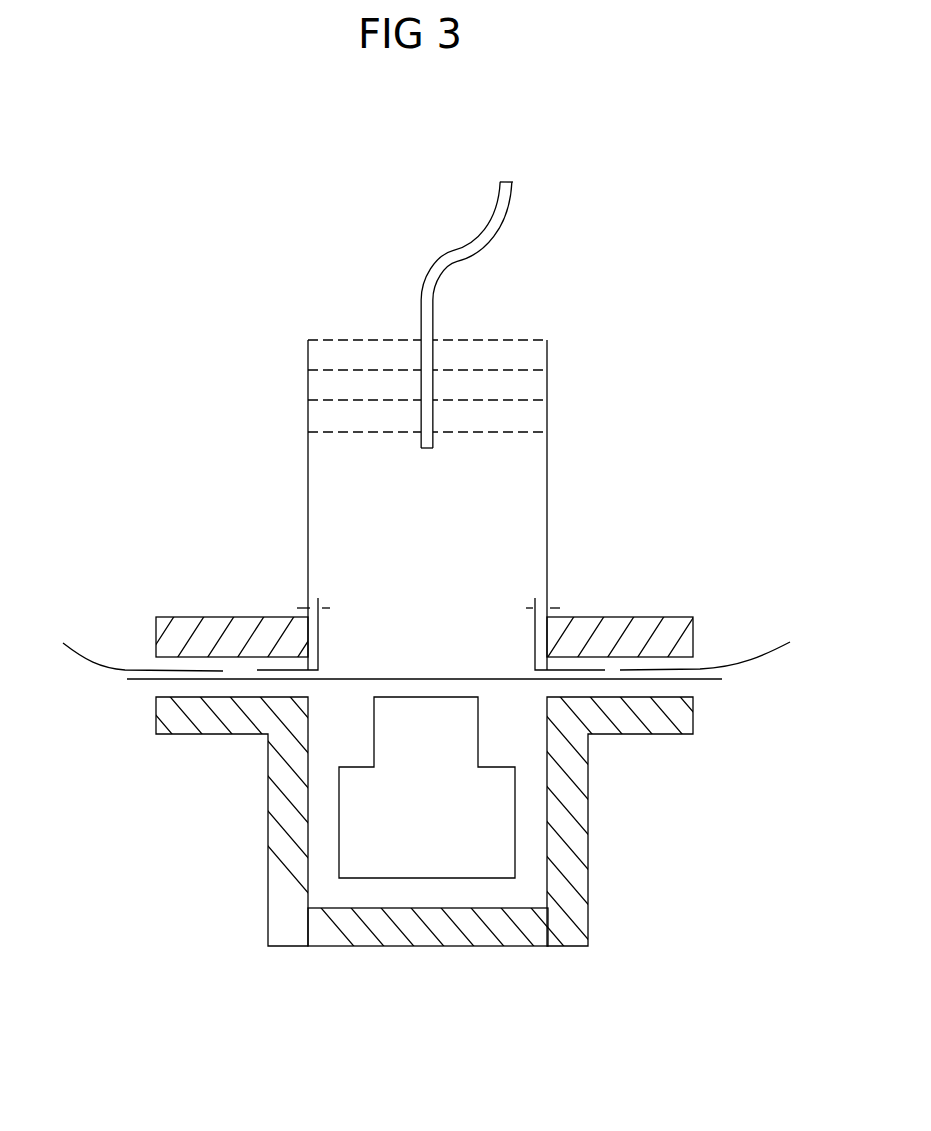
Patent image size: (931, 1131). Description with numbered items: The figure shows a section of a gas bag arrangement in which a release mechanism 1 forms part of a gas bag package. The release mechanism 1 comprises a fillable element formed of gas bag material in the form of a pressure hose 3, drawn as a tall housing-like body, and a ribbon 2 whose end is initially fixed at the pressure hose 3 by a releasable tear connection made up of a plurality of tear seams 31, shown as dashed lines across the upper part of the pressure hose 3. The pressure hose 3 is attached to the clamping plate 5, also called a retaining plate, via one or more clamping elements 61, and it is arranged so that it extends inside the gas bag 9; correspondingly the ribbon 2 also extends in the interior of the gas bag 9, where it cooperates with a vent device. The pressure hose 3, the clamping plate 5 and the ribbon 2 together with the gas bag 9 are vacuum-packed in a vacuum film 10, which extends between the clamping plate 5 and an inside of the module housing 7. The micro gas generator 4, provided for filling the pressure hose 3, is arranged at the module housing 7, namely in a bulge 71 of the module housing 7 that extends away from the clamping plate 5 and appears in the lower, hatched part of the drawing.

The release mechanism 1 is at (655, 406).
The ribbon 2 is at (450, 258).
The pressure hose 3 is at (550, 538).
The tear seams 31 is at (527, 371).
The micro gas generator 4 is at (494, 845).
The clamping plate 5 is at (646, 632).
The clamping elements 61 is at (316, 627).
The module housing 7 is at (207, 720).
The bulge 71 is at (515, 832).
The gas bag 9 is at (113, 665).
The vacuum film 10 is at (703, 682).